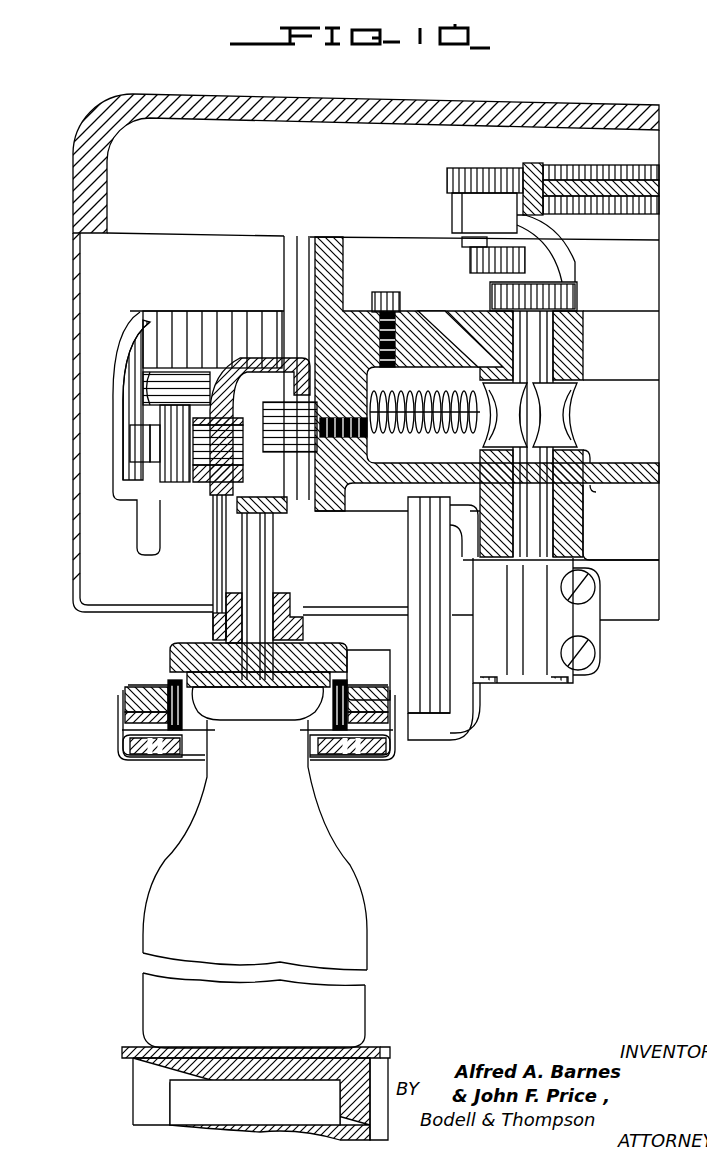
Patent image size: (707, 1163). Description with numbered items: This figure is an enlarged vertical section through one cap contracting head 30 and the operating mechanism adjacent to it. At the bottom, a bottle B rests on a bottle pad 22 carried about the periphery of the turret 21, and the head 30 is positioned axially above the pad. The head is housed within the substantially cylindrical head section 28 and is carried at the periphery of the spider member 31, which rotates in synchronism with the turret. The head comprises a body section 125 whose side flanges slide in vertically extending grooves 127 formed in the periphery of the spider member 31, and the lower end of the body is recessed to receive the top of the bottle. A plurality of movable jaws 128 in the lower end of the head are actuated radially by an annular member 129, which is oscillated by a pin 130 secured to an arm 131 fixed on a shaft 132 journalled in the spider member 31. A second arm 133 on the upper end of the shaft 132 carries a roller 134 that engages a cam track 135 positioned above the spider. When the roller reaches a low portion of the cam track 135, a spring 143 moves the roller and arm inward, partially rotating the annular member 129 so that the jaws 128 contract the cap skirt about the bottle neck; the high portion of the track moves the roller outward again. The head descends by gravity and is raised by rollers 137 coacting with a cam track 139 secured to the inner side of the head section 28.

The head section 28 is at (88, 223).
The roller 134 is at (448, 182).
The cam track 135 is at (531, 170).
The arm 133 is at (490, 262).
The grooves 127 is at (302, 282).
The spring 143 is at (401, 395).
The shaft 132 is at (478, 461).
The spider member 31 is at (628, 487).
The cam track 139 is at (140, 500).
The rollers 137 is at (177, 493).
The body section 125 is at (217, 560).
The pin 130 is at (417, 573).
The arm 131 is at (504, 649).
The annular member 129 is at (393, 651).
The cap contracting head 30 is at (118, 707).
The movable jaws 128 is at (195, 740).
The bottle B is at (347, 900).
The bottle pad 22 is at (378, 1052).
The turret 21 is at (133, 1087).